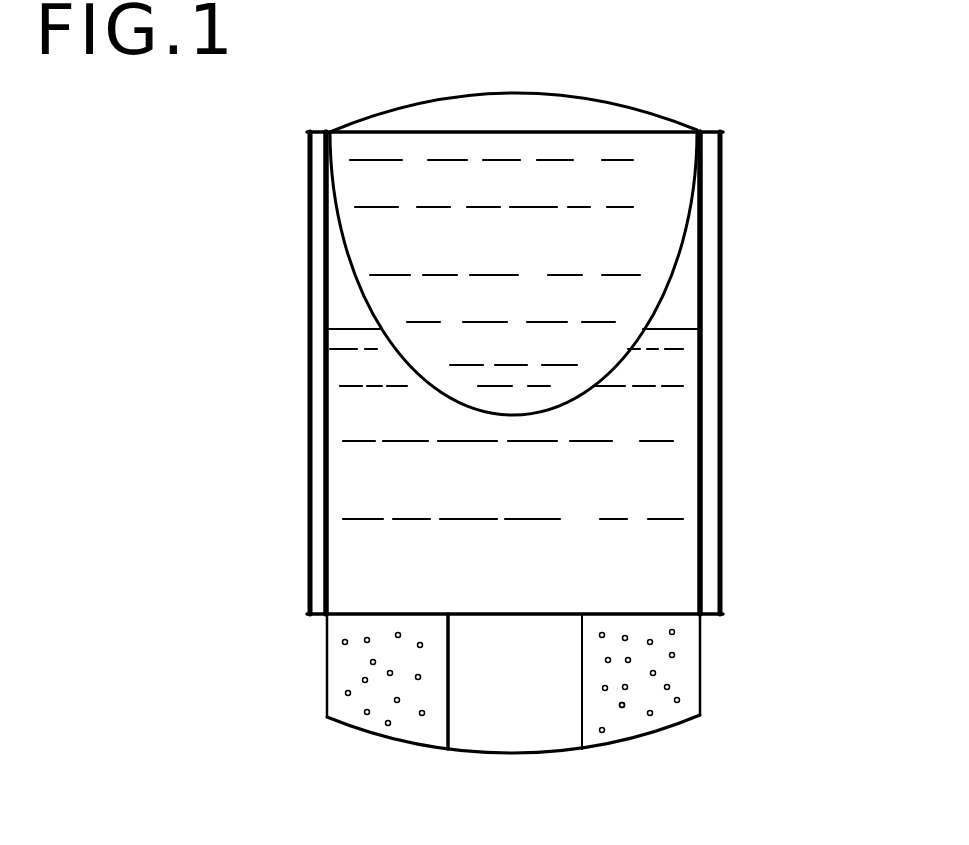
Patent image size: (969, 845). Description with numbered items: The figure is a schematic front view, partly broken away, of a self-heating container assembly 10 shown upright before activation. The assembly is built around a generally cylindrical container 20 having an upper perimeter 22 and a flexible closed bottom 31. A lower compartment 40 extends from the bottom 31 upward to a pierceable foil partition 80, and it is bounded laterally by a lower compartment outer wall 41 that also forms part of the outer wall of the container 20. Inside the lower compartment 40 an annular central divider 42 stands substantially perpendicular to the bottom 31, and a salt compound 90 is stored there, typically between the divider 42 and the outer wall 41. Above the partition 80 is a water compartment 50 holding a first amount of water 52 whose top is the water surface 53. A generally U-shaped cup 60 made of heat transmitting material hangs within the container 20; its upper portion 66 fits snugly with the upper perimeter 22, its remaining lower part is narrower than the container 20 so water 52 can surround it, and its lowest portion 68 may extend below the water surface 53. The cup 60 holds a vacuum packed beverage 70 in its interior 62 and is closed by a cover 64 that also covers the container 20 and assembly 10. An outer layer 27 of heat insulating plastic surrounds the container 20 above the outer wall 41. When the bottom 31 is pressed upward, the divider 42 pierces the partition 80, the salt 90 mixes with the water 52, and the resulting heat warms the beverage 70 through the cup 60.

The container assembly 10 is at (297, 511).
The container 20 is at (708, 508).
The upper perimeter 22 is at (328, 147).
The outer layer 27 is at (315, 340).
The flexible closed bottom 31 is at (663, 733).
The lower compartment 40 is at (687, 673).
The lower compartment outer wall 41 is at (326, 684).
The annular central divider 42 is at (580, 707).
The water compartment 50 is at (678, 470).
The water 52 is at (598, 518).
The water surface 53 is at (678, 350).
The cup 60 is at (673, 238).
The interior of the cup 62 is at (627, 293).
The cover 64 is at (652, 110).
The upper portion of the cup 66 is at (335, 236).
The lowest portion of the cup 68 is at (452, 400).
The beverage 70 is at (620, 207).
The partition 80 is at (388, 613).
The salt compound 90 is at (620, 703).